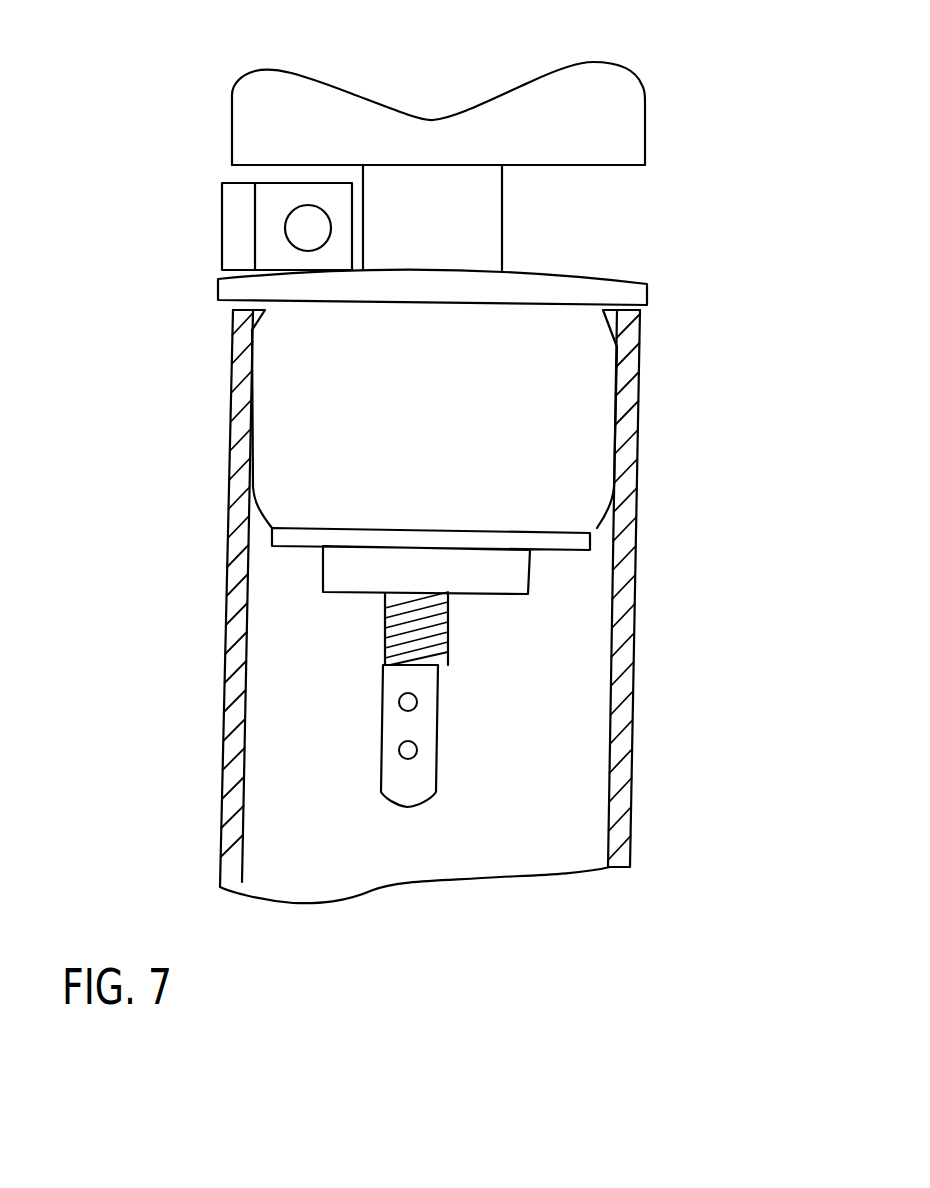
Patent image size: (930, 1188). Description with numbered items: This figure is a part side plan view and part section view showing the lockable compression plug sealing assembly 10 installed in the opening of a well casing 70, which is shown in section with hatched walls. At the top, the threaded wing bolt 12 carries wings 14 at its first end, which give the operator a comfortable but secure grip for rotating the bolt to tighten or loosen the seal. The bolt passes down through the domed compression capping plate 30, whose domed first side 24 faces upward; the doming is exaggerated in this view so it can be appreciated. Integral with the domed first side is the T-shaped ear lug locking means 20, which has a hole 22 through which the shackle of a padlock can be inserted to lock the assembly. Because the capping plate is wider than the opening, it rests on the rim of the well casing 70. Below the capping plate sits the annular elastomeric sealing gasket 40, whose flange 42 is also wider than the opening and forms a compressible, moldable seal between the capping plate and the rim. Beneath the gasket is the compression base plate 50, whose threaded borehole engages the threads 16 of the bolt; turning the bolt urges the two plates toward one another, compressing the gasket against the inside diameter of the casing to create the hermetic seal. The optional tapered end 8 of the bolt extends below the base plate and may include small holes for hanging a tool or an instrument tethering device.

The lockable compression plug sealing assembly 10 is at (445, 73).
The wings of threaded wing bolt 14 is at (645, 95).
The threaded wing bolt 12 is at (502, 218).
The T-shaped ear lug locking means 20 is at (222, 215).
The hole in T-shaped locking part 22 is at (285, 245).
The domed first side of compression capping plate 24 is at (562, 272).
The domed compression capping plate 30 is at (625, 281).
The flange of gasket 42 is at (218, 304).
The annular elastomeric sealing gasket 40 is at (438, 413).
The compression base plate 50 is at (311, 547).
The threads of threaded wing bolt 16 is at (448, 628).
The tapered end of threaded wing bolt 8 is at (438, 715).
The well casing 70 is at (633, 658).